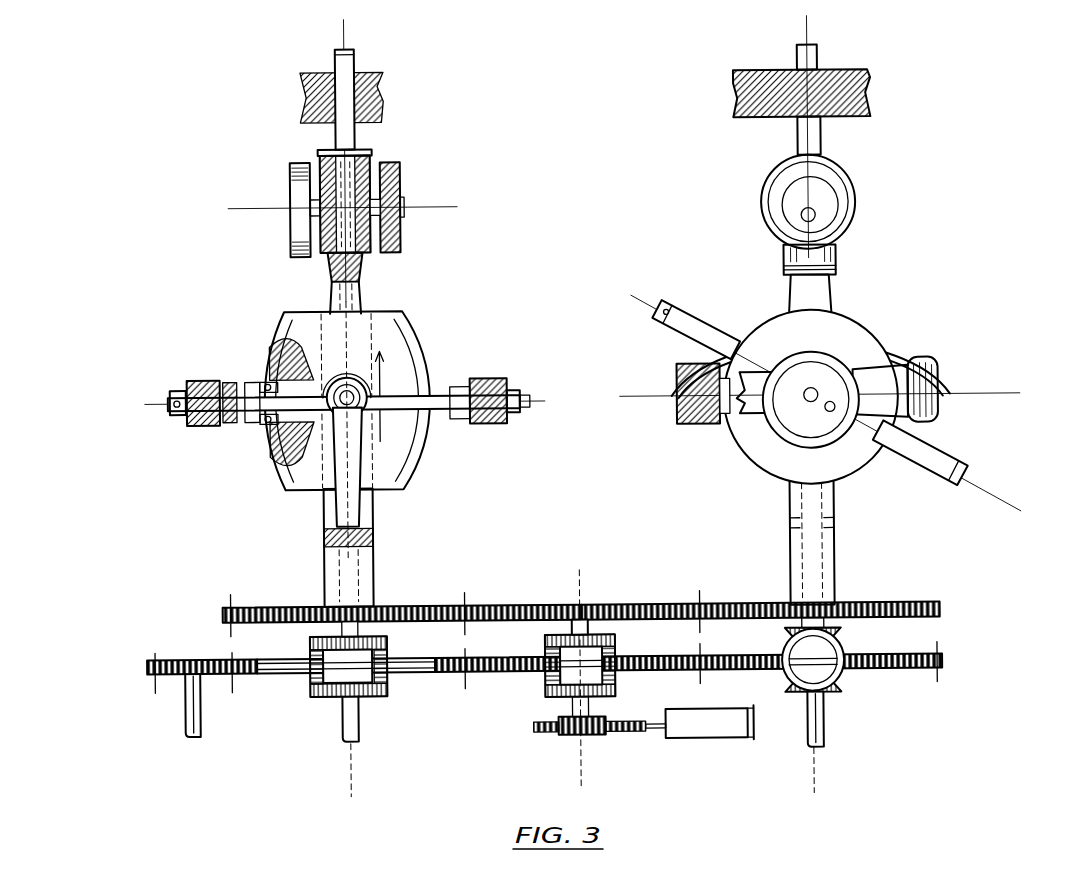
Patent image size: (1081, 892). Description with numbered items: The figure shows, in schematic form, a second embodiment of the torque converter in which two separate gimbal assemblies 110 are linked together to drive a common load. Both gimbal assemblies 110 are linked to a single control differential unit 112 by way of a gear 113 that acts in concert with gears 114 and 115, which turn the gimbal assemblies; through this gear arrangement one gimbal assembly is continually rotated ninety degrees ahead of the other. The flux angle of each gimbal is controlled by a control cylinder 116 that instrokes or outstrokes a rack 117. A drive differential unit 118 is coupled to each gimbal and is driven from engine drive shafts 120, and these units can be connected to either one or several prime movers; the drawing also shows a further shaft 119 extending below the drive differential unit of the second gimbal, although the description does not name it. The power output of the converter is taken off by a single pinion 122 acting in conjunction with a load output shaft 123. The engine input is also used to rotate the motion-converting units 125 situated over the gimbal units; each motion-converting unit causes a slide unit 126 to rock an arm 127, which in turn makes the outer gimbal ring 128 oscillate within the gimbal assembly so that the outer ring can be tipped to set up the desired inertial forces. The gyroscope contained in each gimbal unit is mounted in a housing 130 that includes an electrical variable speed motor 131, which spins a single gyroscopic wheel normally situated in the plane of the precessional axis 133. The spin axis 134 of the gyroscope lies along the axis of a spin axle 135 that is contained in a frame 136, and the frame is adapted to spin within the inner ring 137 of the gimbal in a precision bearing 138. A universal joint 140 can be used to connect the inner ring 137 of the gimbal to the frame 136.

The gimbal assembly 110 is at (420, 305).
The control differential unit 112 is at (625, 647).
The gear 113 is at (600, 607).
The gear 114 is at (405, 605).
The gear 115 is at (905, 605).
The control cylinder 116 is at (725, 738).
The rack 117 is at (545, 740).
The drive differential unit 118 is at (322, 703).
The output shaft 119 is at (825, 730).
The engine drive shaft 120 is at (358, 733).
The pinion 122 is at (180, 660).
The load output shaft 123 is at (190, 712).
The motion-converting unit 125 is at (418, 166).
The slide unit 126 is at (832, 292).
The arm 127 is at (835, 385).
The outer gimbal ring 128 is at (695, 300).
The housing 130 is at (980, 422).
The electrical variable speed motor 131 is at (420, 356).
The precessional axis 133 is at (322, 300).
The spin axis 134 is at (238, 415).
The spin axle 135 is at (200, 425).
The frame 136 is at (187, 385).
The inner ring 137 is at (708, 480).
The precision bearing 138 is at (520, 395).
The universal joint 140 is at (352, 388).